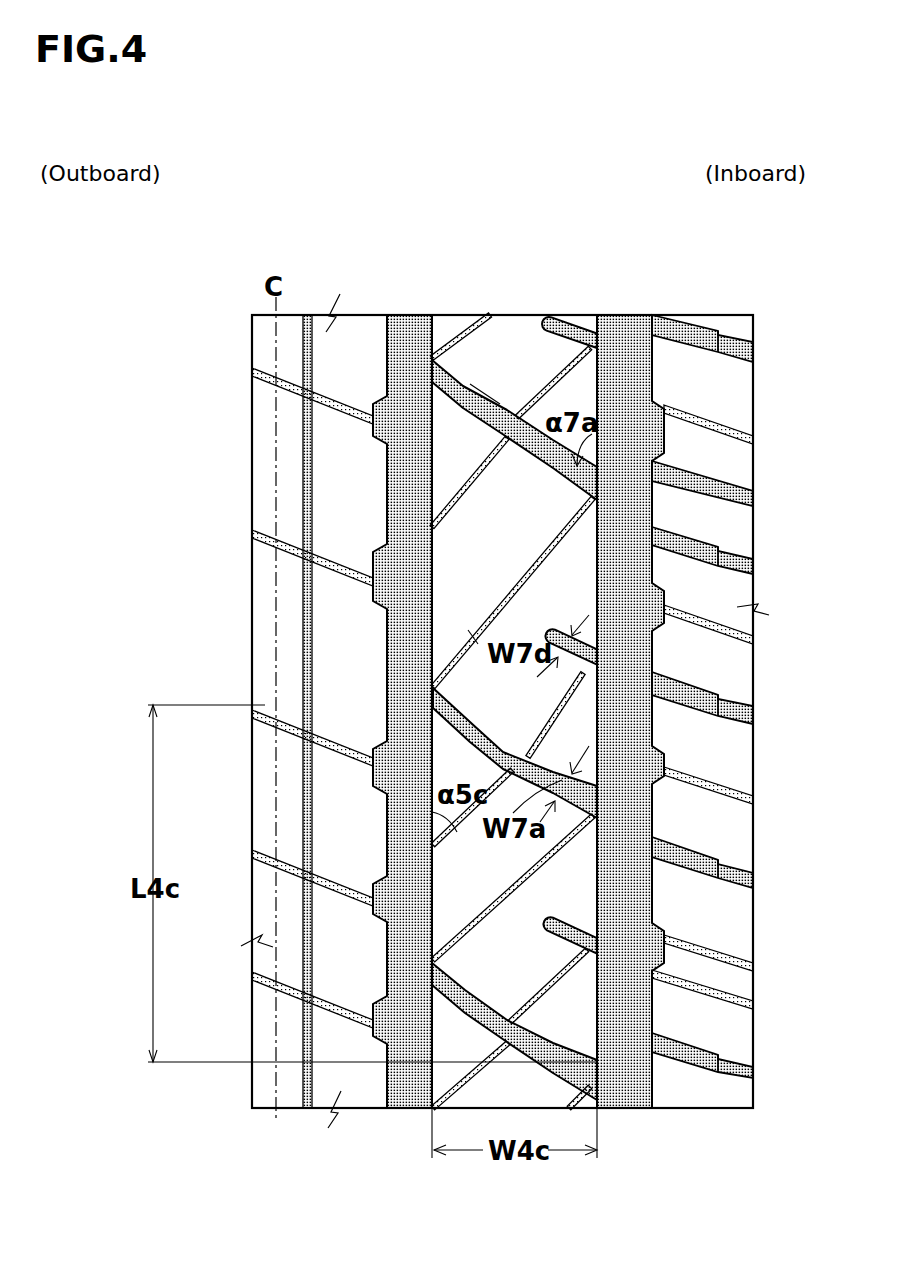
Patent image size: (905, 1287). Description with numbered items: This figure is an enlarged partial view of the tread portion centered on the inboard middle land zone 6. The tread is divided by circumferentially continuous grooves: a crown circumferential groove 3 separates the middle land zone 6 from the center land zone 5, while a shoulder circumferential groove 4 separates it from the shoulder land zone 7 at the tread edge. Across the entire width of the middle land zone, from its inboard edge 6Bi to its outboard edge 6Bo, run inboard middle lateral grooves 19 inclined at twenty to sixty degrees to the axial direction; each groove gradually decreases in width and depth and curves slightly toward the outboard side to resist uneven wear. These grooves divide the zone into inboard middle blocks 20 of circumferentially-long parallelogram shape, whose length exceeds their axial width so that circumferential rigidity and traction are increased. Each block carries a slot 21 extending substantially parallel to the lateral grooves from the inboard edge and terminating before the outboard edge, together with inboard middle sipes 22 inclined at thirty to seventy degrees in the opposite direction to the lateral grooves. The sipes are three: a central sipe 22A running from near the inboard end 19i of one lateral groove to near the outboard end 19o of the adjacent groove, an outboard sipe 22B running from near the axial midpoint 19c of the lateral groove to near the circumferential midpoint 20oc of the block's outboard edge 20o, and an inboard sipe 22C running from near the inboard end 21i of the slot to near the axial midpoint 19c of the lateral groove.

The crown circumferential groove 3 is at (400, 1072).
The shoulder circumferential groove 4 is at (640, 1073).
The center land zone 5 is at (357, 372).
The middle land zone 6 is at (538, 370).
The outboard edge of inboard middle land zone 6Bo is at (428, 336).
The inboard edge of inboard middle land zone 6Bi is at (603, 355).
The shoulder land zone 7 is at (695, 367).
The inboard middle lateral groove 19 is at (600, 478).
The axial midpoint of inboard middle lateral groove 19c is at (505, 410).
The outboard end of inboard middle lateral groove 19o is at (455, 697).
The inboard end of inboard middle lateral groove 19i is at (600, 490).
The inboard middle block 20 is at (573, 603).
The outboard edge of inboard middle block 20o is at (473, 637).
The circumferential midpoint of outboard edge of inboard middle block 20oc is at (432, 527).
The slot 21 is at (610, 650).
The inboard end of slot 21i is at (653, 668).
The inboard middle sipe 22 is at (108, 440).
The central sipe 22A is at (510, 595).
The outboard sipe 22B is at (470, 472).
The inboard sipe 22C is at (557, 708).